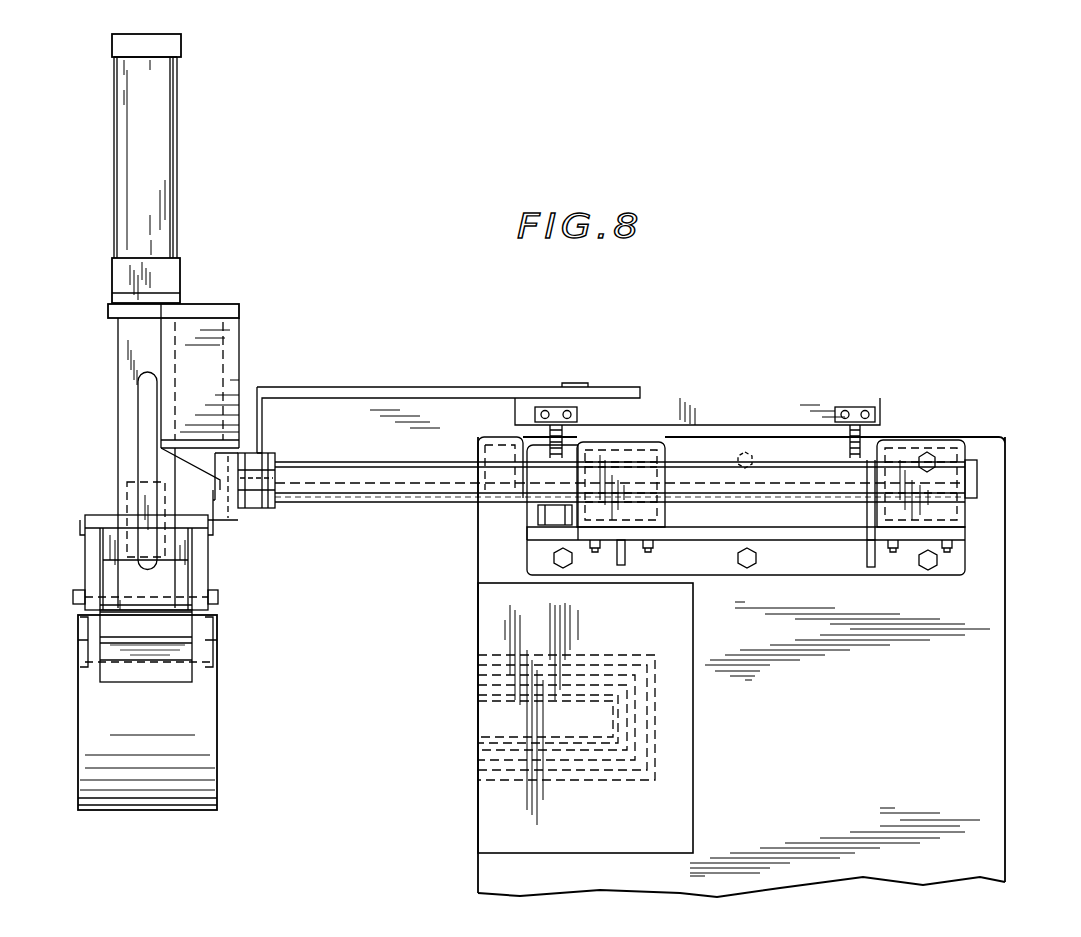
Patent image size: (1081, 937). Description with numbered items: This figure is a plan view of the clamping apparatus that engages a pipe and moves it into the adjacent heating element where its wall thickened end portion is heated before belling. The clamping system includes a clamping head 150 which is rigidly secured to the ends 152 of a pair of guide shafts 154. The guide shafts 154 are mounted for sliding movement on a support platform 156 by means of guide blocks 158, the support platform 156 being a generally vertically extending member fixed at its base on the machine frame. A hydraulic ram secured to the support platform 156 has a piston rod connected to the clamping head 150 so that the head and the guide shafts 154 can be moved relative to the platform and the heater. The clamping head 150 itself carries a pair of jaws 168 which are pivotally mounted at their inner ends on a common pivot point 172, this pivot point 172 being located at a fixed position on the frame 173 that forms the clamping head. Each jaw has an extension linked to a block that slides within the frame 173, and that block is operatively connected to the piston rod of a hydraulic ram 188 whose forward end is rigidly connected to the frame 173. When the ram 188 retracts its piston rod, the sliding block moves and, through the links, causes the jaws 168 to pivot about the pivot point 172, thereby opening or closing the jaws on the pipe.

The hydraulic ram 188 is at (174, 149).
The clamping head 150 is at (282, 290).
The ends of guide shafts 152 is at (278, 507).
The guide shafts 154 is at (447, 487).
The support platform 156 is at (955, 535).
The guide blocks 158 is at (663, 512).
The jaws 168 is at (203, 712).
The pivot point 172 is at (73, 597).
The frame 173 is at (123, 488).